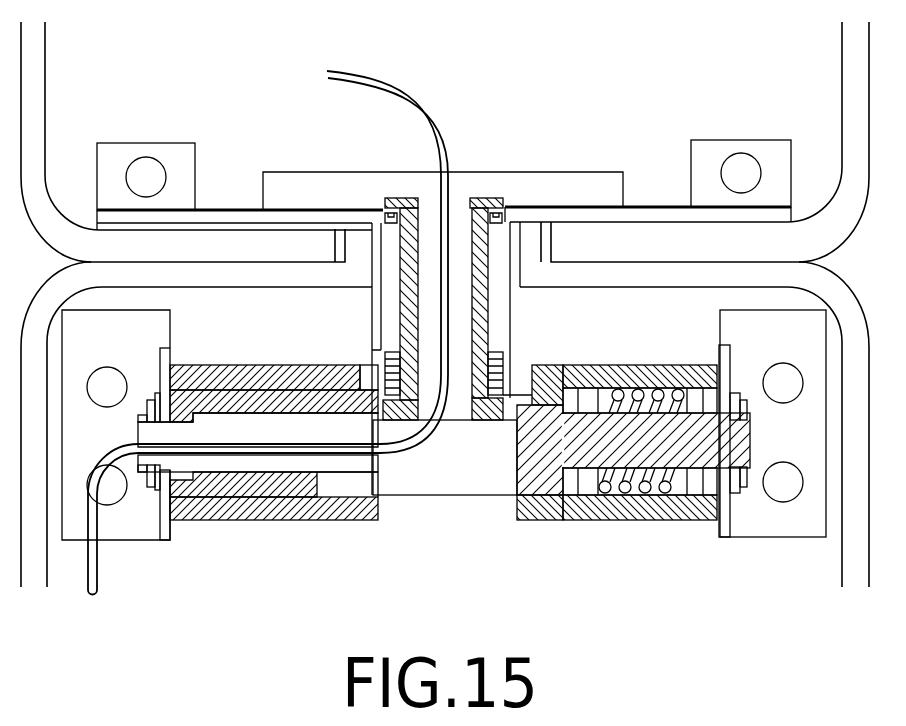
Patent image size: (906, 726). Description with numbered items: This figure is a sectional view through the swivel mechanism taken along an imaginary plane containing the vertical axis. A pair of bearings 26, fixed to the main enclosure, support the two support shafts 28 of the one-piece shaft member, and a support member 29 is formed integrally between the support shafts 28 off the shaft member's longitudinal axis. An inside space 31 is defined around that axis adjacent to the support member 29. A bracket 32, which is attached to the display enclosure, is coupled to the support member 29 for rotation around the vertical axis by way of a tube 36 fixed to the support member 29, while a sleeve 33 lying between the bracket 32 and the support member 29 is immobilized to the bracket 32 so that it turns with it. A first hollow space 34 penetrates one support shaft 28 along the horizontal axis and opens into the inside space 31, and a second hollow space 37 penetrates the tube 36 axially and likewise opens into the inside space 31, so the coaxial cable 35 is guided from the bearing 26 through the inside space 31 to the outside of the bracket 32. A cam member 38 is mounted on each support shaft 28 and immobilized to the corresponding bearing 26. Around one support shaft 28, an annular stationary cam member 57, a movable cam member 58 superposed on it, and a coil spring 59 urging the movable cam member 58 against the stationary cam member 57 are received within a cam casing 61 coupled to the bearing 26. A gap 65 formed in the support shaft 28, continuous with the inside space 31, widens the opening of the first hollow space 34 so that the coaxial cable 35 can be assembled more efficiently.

The bearing 26 is at (160, 358).
The support shaft 28 is at (217, 393).
The support member 29 is at (383, 392).
The inside space 31 is at (457, 477).
The bracket 32 is at (640, 207).
The sleeve 33 is at (508, 340).
The first hollow space 34 is at (242, 470).
The coaxial cable 35 is at (96, 583).
The tube 36 is at (393, 200).
The second hollow space 37 is at (465, 200).
The cam member 38 is at (265, 363).
The stationary cam member 57 is at (571, 493).
The movable cam member 58 is at (591, 495).
The coil spring 59 is at (666, 490).
The cam casing 61 is at (636, 363).
The gap 65 is at (318, 480).